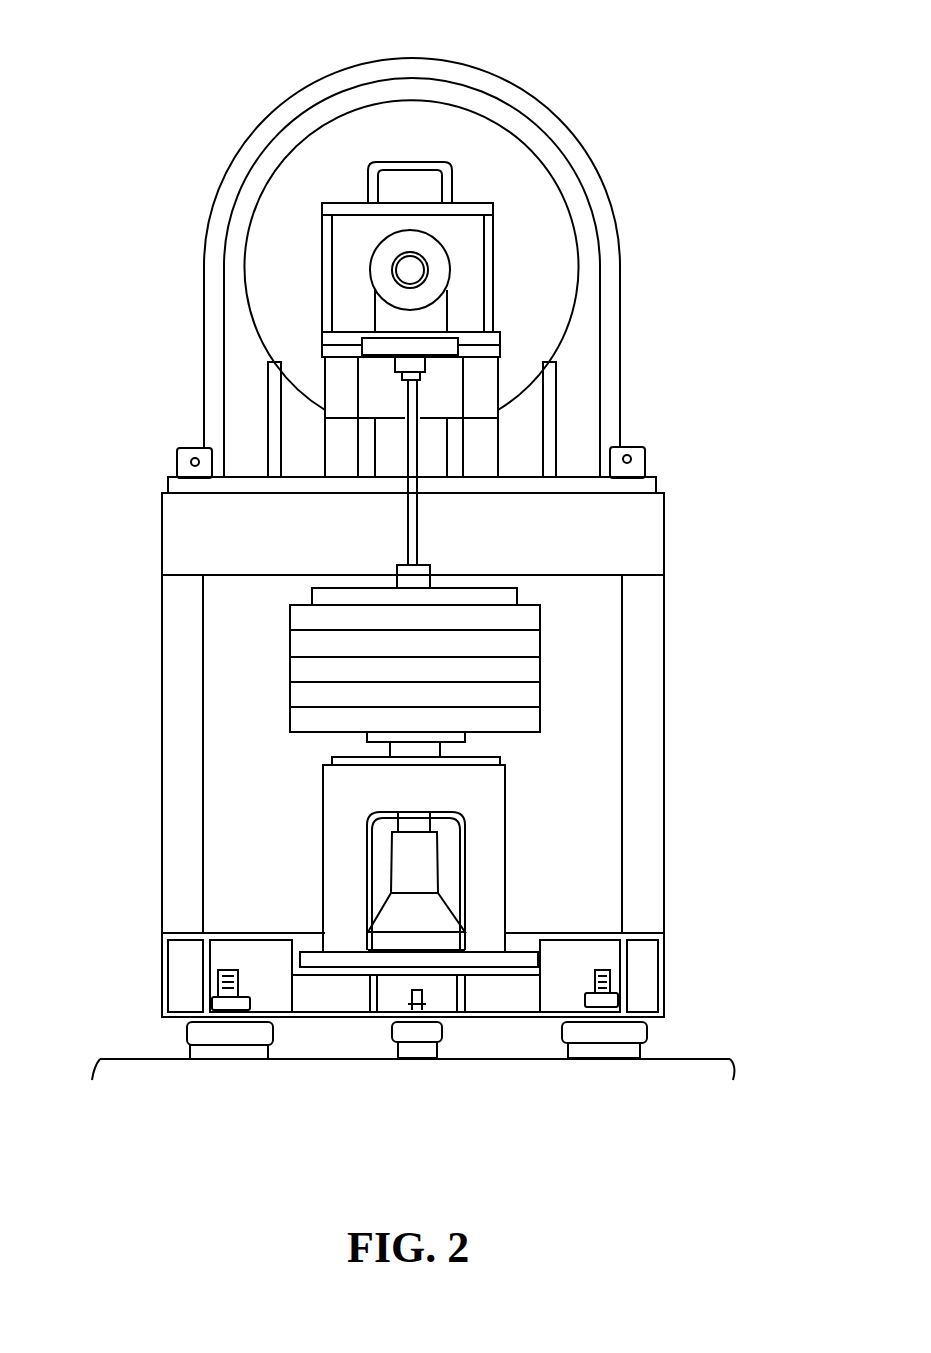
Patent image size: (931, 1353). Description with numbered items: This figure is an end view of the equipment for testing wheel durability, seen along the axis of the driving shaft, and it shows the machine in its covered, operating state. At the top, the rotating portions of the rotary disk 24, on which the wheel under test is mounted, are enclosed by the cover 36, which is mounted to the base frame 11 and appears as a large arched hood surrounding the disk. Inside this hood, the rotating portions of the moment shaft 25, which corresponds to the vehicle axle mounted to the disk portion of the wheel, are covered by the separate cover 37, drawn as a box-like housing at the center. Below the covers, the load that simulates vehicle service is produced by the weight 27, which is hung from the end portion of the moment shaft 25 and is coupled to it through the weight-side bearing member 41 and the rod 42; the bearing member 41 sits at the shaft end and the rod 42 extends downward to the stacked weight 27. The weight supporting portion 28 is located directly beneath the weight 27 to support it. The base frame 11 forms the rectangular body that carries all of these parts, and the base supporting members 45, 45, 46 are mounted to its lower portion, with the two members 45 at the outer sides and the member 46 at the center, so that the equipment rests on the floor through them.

The base frame 11 is at (165, 878).
The rotary disk 24 is at (255, 193).
The moment shaft 25 is at (432, 264).
The weight 27 is at (292, 667).
The weight supporting portion 28 is at (505, 840).
The cover 36 is at (267, 112).
The cover 37 is at (483, 200).
The weight-side bearing member 41 is at (377, 300).
The rod 42 is at (405, 533).
The base supporting member 45 is at (183, 1032).
The base supporting member 46 is at (442, 1028).